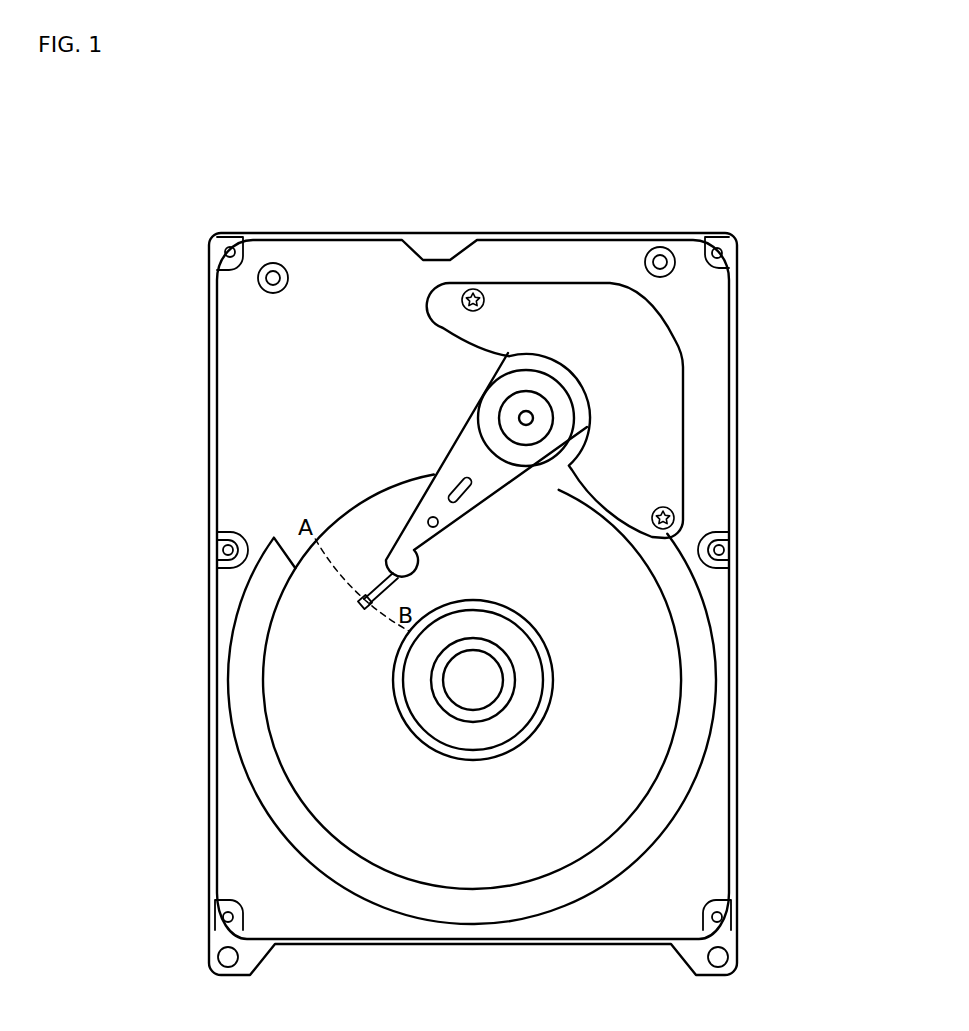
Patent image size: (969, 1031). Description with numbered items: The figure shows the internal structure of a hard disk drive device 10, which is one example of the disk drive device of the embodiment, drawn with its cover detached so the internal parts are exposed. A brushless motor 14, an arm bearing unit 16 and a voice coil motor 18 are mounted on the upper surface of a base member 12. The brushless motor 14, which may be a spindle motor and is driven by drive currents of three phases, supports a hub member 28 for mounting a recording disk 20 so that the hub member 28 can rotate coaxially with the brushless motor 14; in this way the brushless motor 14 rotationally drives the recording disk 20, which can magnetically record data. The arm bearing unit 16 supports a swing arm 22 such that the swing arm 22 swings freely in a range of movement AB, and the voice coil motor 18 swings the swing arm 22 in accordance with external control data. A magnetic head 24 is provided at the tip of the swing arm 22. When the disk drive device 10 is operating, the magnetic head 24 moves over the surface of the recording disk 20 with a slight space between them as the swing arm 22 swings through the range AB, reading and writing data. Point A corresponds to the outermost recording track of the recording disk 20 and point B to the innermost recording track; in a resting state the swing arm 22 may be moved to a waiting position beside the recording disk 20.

The hard disk drive device 10 is at (592, 190).
The base member 12 is at (737, 328).
The brushless motor 14 is at (546, 651).
The arm bearing unit 16 is at (574, 421).
The voice coil motor 18 is at (653, 317).
The recording disk 20 is at (655, 715).
The swing arm 22 is at (450, 457).
The magnetic head 24 is at (362, 602).
The hub member 28 is at (517, 713).